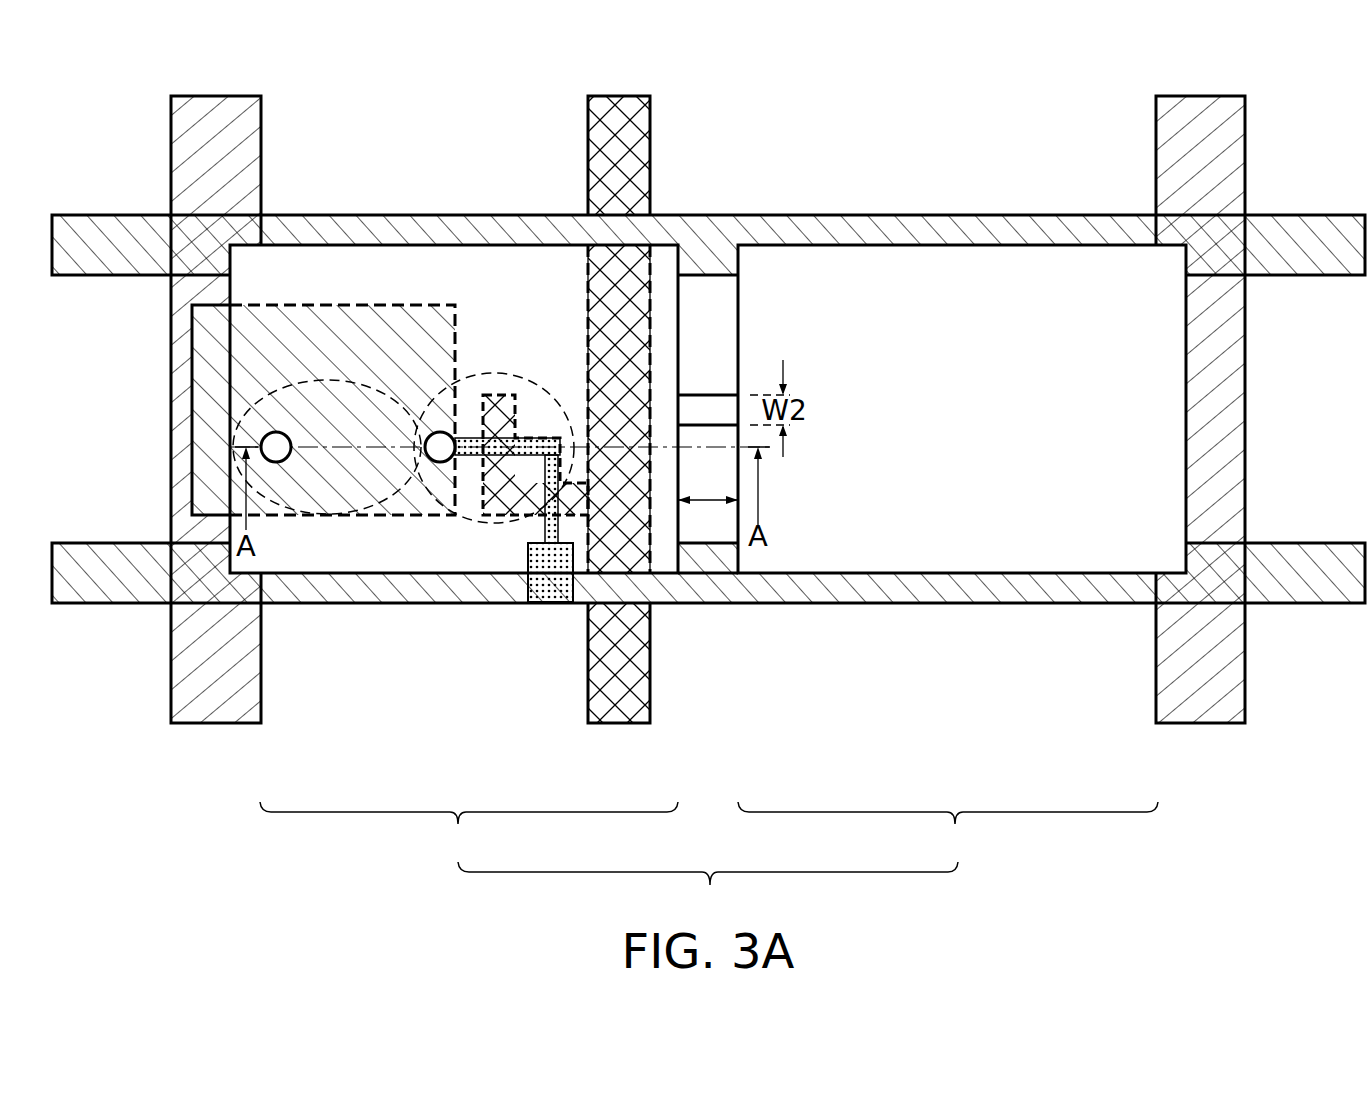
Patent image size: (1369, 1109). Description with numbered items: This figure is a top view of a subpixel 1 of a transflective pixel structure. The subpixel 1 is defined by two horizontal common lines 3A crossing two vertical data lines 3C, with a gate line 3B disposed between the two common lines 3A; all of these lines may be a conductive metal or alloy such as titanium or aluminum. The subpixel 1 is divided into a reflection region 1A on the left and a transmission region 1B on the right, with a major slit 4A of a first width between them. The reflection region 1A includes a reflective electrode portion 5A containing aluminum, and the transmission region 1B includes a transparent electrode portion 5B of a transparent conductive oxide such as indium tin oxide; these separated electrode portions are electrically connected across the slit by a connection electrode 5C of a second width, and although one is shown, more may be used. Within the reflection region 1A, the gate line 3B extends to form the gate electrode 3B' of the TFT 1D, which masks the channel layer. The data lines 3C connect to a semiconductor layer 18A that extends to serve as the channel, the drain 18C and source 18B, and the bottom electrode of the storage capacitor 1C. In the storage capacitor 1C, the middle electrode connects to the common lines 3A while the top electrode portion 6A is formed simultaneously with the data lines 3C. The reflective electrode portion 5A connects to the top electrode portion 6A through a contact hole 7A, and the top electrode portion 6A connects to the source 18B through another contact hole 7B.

The subpixel 1 is at (708, 891).
The reflection region 1A is at (469, 832).
The transmission region 1B is at (948, 832).
The storage capacitor 1C is at (297, 382).
The TFT 1D is at (527, 373).
The common line 3A is at (217, 697).
The gate line 3B is at (619, 442).
The gate electrode 3B' is at (492, 335).
The data line 3C is at (1305, 243).
The major slit 4A is at (707, 522).
The reflective electrode portion 5A is at (378, 262).
The transparent electrode portion 5B is at (960, 262).
The connection electrode 5C is at (708, 412).
The top electrode portion 6A is at (243, 381).
The contact hole 7A is at (262, 447).
The contact hole 7B is at (433, 432).
The semiconductor layer 18A is at (550, 603).
The source 18B is at (472, 455).
The drain 18C is at (567, 438).